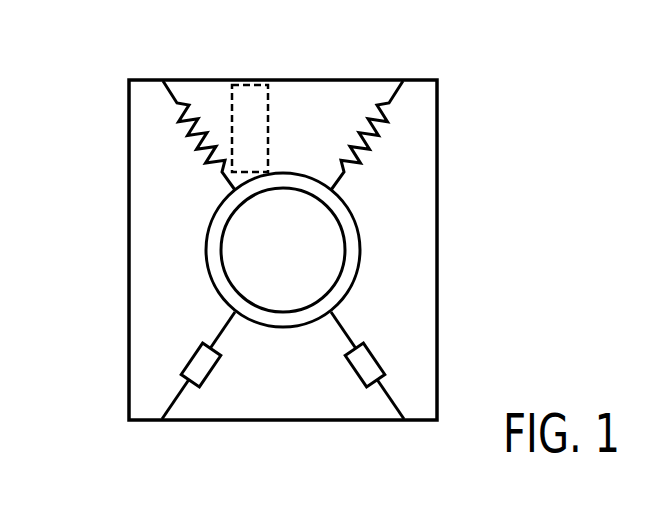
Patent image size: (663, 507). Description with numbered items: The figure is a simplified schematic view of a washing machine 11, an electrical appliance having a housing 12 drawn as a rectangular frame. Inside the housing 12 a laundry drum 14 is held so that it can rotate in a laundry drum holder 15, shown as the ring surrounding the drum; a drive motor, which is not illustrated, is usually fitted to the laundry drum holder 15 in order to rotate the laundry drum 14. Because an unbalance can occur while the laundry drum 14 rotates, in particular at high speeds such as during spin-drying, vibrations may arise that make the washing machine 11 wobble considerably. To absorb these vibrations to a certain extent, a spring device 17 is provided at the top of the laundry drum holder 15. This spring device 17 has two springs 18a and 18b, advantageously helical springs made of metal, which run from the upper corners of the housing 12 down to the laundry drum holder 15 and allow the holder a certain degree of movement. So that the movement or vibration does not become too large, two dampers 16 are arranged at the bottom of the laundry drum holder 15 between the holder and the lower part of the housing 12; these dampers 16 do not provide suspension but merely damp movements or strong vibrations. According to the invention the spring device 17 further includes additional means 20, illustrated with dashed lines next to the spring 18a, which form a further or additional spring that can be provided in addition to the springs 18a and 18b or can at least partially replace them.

The washing machine 11 is at (556, 70).
The housing 12 is at (437, 107).
The laundry drum 14 is at (297, 262).
The laundry drum holder 15 is at (360, 268).
The dampers 16 is at (380, 360).
The spring device 17 is at (162, 158).
The spring 18a is at (177, 120).
The spring 18b is at (368, 118).
The additional means 20 is at (267, 103).